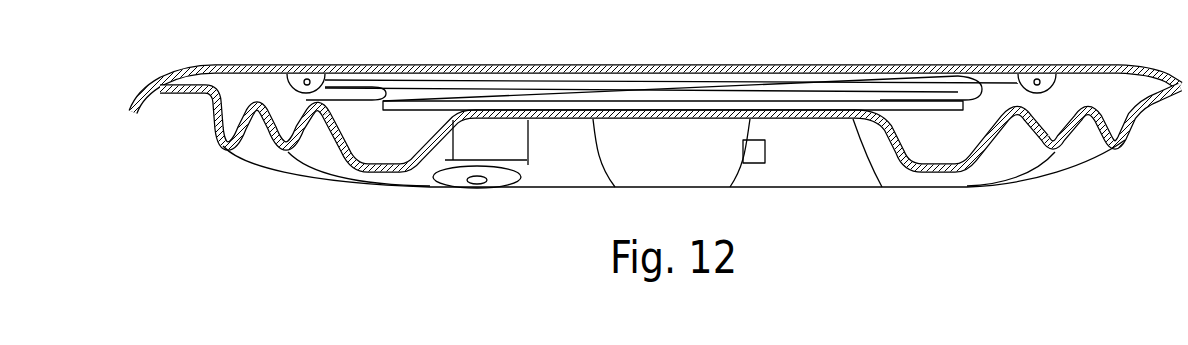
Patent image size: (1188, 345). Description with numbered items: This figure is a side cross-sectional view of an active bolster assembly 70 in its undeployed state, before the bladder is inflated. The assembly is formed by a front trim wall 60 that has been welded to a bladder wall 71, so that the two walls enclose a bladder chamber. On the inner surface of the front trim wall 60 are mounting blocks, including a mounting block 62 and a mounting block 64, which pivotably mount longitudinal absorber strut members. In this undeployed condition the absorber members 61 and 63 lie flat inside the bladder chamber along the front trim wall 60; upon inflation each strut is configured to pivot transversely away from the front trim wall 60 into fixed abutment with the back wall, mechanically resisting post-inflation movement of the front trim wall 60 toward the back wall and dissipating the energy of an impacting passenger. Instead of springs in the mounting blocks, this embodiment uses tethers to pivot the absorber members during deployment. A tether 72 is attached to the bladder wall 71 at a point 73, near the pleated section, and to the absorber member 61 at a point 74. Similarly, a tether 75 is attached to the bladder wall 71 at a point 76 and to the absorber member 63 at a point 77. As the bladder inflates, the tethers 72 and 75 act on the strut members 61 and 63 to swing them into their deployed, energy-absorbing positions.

The front trim wall 60 is at (200, 64).
The absorber strut member 61 is at (479, 86).
The mounting block 62 is at (300, 72).
The absorber strut member 63 is at (848, 89).
The mounting block 64 is at (1032, 72).
The active bolster assembly 70 is at (656, 80).
The bladder wall 71 is at (401, 191).
The tether 72 is at (358, 102).
The attachment point 73 is at (240, 105).
The attachment point 74 is at (392, 88).
The tether 75 is at (986, 102).
The attachment point 76 is at (1103, 103).
The attachment point 77 is at (950, 80).